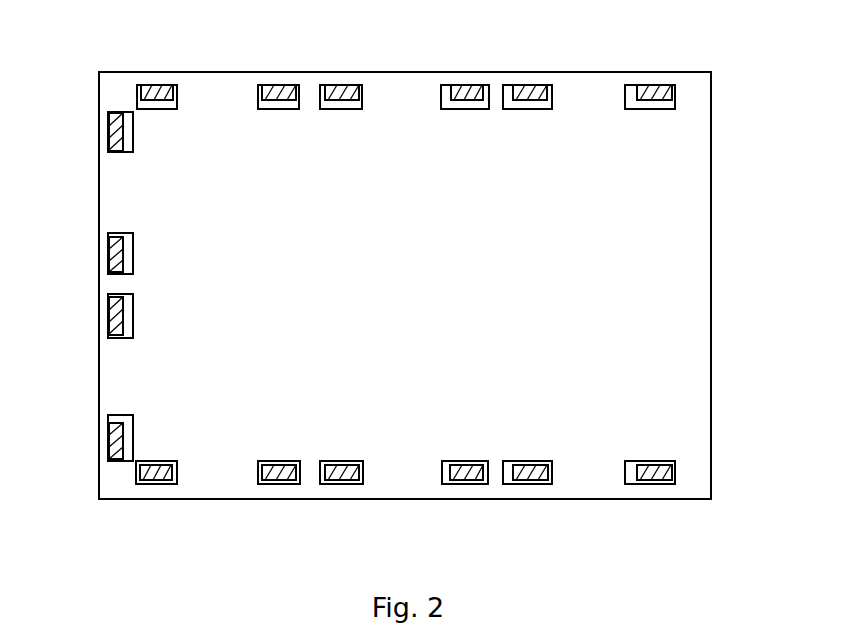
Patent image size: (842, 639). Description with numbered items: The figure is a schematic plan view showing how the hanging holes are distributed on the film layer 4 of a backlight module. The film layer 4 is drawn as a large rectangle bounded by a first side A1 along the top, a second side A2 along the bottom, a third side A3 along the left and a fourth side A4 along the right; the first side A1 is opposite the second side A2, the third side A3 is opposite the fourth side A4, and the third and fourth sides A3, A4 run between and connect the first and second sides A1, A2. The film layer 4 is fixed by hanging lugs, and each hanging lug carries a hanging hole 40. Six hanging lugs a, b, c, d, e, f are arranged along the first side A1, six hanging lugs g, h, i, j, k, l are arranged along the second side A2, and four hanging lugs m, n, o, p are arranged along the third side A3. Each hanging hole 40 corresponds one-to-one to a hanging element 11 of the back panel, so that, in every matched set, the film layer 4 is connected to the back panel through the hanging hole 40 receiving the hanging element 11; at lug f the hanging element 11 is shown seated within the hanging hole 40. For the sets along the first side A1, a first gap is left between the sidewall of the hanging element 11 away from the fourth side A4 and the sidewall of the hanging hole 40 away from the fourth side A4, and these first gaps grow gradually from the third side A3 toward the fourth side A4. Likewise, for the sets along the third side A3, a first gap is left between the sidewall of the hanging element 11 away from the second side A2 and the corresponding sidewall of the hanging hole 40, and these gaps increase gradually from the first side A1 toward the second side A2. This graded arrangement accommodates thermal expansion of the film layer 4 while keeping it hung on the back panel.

The film layer 4 is at (657, 234).
The hanging element 11 is at (631, 74).
The hanging hole 40 is at (677, 111).
The first side A1 is at (698, 61).
The second side A2 is at (717, 514).
The third side A3 is at (87, 476).
The fourth side A4 is at (722, 341).
The hanging lug a is at (145, 85).
The hanging lug b is at (268, 85).
The hanging lug c is at (330, 85).
The hanging lug d is at (453, 85).
The hanging lug e is at (515, 85).
The hanging lug f is at (650, 73).
The hanging lug g is at (154, 484).
The hanging lug h is at (277, 484).
The hanging lug i is at (337, 484).
The hanging lug j is at (458, 484).
The hanging lug k is at (532, 484).
The hanging lug l is at (655, 484).
The hanging lug m is at (108, 150).
The hanging lug n is at (108, 243).
The hanging lug o is at (108, 310).
The hanging lug p is at (110, 426).